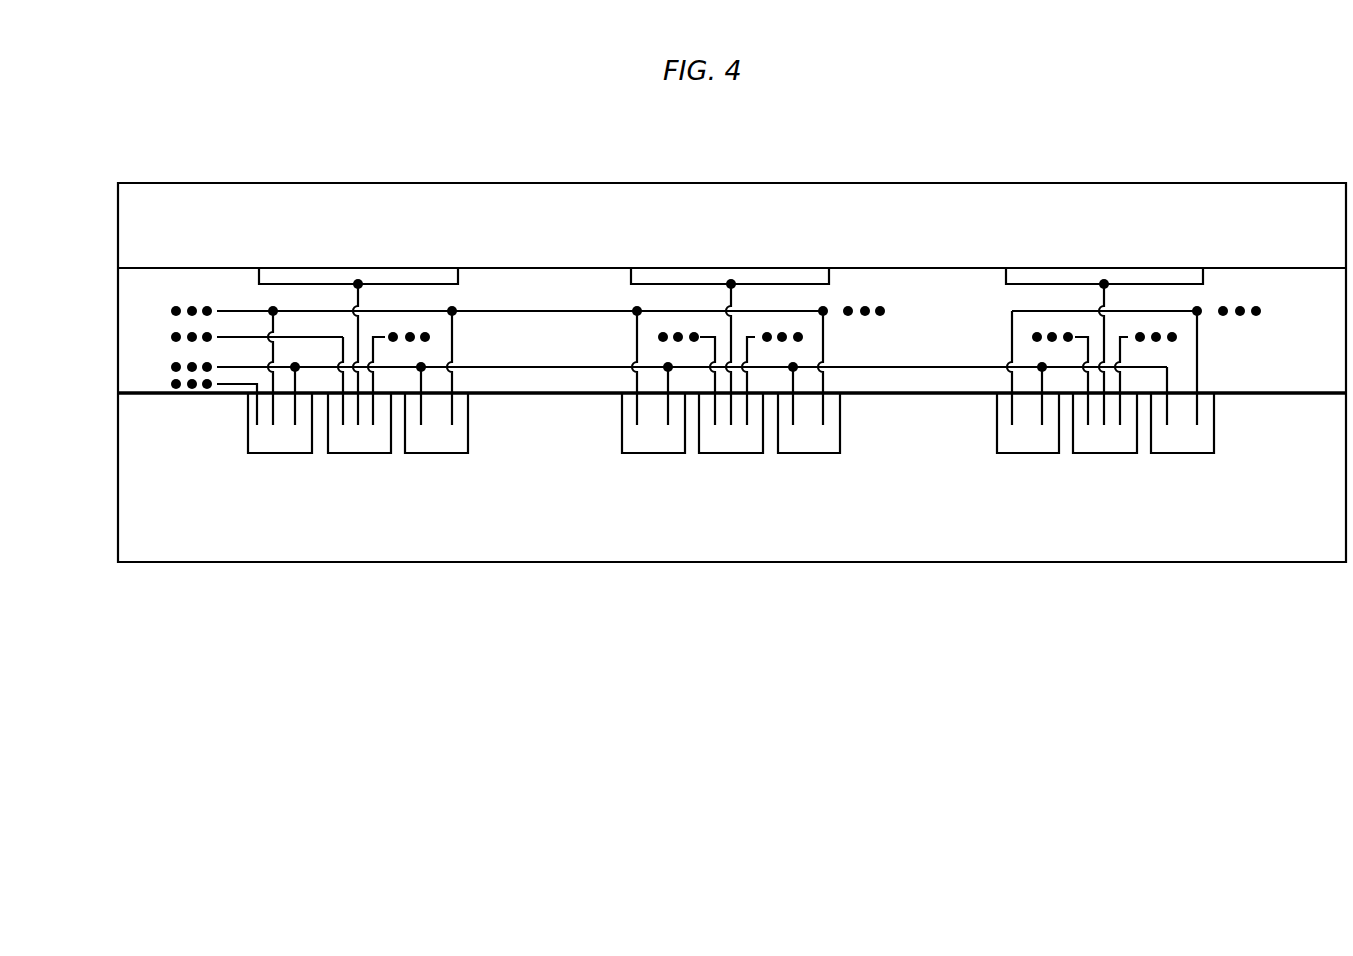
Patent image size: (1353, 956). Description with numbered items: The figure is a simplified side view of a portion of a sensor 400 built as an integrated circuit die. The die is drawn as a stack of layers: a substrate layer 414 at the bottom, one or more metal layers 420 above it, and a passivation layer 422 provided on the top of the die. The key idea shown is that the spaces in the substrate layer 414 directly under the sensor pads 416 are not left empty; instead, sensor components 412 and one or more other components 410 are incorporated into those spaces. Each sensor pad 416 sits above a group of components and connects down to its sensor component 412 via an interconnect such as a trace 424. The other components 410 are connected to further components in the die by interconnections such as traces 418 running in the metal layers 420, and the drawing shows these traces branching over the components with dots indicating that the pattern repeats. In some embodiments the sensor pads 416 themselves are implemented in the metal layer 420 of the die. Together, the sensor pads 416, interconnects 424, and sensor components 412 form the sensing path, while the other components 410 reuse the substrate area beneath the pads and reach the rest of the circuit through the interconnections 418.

The sensor 400 is at (866, 632).
The other components 410 is at (283, 447).
The sensor components 412 is at (360, 447).
The substrate layer 414 is at (138, 496).
The sensor pads 416 is at (330, 277).
The interconnections 418 is at (227, 367).
The metal layers 420 is at (140, 371).
The passivation layer 422 is at (143, 222).
The interconnects 424 is at (353, 292).